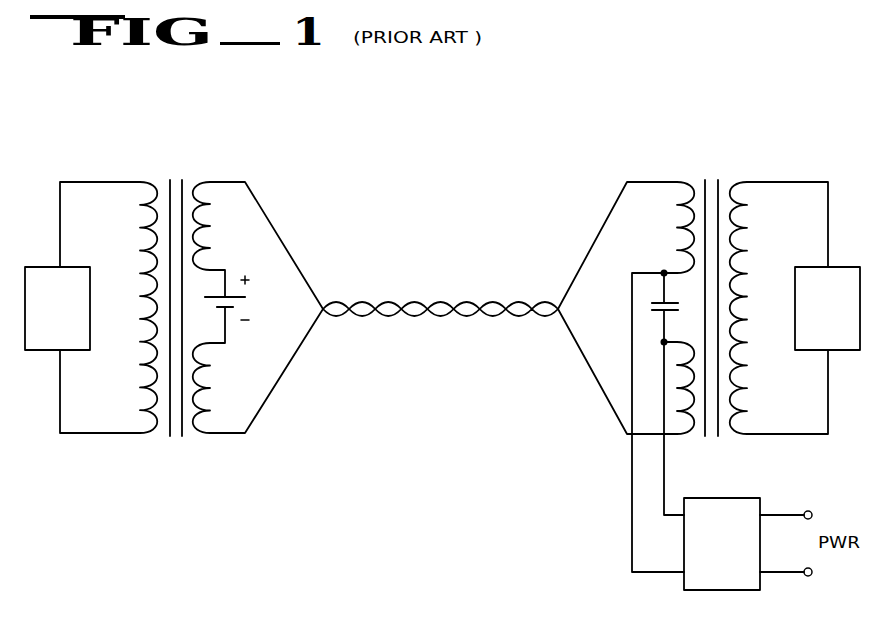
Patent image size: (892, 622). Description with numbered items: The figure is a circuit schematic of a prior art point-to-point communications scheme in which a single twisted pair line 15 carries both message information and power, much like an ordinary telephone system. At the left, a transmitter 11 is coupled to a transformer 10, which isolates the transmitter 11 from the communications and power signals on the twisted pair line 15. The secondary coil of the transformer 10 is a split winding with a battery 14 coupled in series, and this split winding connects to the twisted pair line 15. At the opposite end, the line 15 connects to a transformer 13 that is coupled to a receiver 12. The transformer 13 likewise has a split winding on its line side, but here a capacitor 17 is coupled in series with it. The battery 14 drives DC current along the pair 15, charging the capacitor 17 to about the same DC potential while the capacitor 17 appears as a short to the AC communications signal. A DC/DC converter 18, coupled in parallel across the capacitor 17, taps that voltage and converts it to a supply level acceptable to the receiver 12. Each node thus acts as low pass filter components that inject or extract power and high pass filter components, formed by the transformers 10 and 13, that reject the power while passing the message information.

The transformer 10 is at (242, 158).
The transmitter 11 is at (67, 341).
The receiver 12 is at (840, 343).
The transformer 13 is at (777, 160).
The battery 14 is at (249, 303).
The twisted pair line 15 is at (392, 294).
The capacitor 17 is at (684, 307).
The DC/DC converter 18 is at (738, 574).